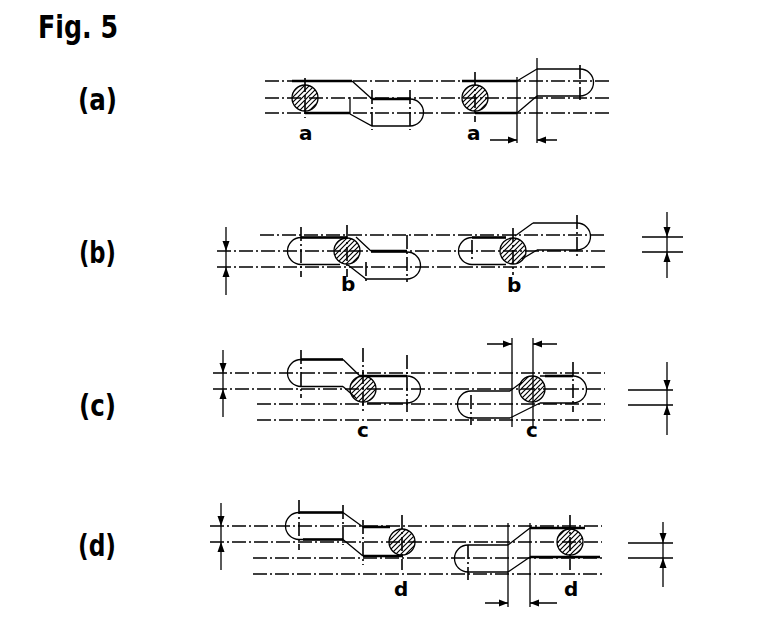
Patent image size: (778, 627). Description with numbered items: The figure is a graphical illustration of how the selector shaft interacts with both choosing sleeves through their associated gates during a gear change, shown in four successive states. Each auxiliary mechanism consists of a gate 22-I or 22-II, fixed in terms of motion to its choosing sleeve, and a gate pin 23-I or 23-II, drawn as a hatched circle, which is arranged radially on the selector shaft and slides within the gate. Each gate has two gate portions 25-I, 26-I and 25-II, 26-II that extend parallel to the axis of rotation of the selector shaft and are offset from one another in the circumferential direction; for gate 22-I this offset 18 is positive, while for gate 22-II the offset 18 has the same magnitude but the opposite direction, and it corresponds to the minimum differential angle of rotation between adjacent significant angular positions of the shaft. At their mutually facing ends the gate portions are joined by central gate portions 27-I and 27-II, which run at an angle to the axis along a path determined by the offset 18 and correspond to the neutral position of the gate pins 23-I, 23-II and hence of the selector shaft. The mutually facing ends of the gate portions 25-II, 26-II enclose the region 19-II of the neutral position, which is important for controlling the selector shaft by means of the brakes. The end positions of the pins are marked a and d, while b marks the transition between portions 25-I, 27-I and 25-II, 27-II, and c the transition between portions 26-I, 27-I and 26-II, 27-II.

The offset 18 is at (222, 259).
The region of the neutral position 19-II is at (525, 143).
The gate 22-I is at (337, 116).
The gate 22-II is at (558, 108).
The gate pin 23-I is at (297, 84).
The gate pin 23-II is at (470, 84).
The gate portion 25-I is at (337, 80).
The gate portion 25-II is at (480, 268).
The gate portion 26-I is at (402, 118).
The gate portion 26-II is at (567, 67).
The central gate portion 27-I is at (355, 513).
The central gate portion 27-II is at (520, 77).